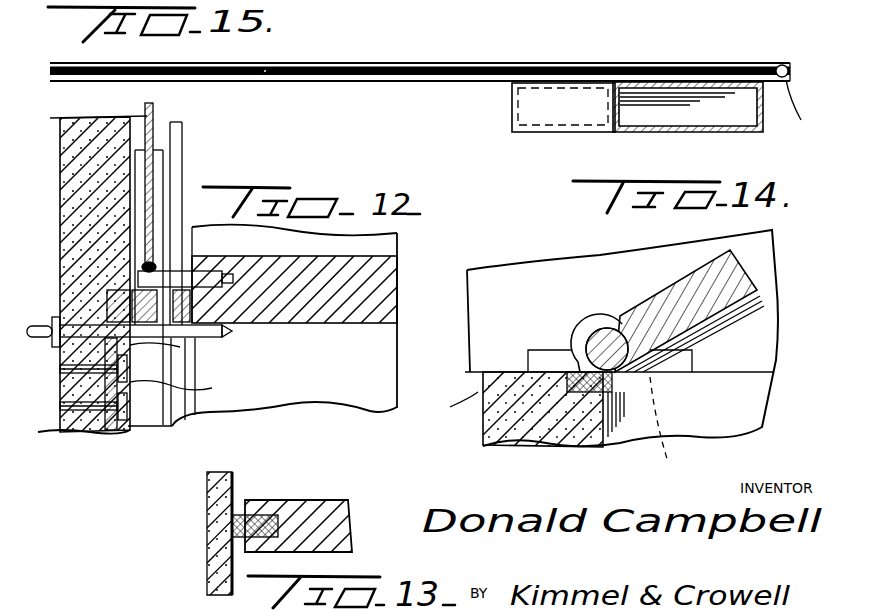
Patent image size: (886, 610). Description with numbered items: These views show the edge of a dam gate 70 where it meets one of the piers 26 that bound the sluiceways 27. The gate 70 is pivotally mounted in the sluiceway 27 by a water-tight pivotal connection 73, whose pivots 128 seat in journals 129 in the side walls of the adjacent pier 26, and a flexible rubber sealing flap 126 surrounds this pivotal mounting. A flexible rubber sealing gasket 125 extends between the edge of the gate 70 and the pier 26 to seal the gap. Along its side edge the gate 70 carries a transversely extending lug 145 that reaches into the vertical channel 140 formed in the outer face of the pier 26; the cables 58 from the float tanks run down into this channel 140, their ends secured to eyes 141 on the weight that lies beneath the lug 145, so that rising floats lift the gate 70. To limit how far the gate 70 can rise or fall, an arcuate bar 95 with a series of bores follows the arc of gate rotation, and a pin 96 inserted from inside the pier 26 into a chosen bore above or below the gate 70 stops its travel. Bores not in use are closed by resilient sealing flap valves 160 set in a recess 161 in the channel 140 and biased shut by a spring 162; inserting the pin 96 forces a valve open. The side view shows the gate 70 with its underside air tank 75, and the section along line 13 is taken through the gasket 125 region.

In FIG. 12, the section line 13- 13 is at (163, 378).
In FIG. 12, the pier 26 is at (63, 138).
In FIG. 13, the pier 26 is at (213, 488).
In FIG. 14, the pier 26 is at (505, 282).
In FIG. 14, the sluiceway 27 is at (488, 372).
In FIG. 12, the cable 58 is at (146, 108).
In FIG. 15, the gate 70 is at (522, 62).
In FIG. 12, the gate 70 is at (373, 258).
In FIG. 13, the gate 70 is at (327, 502).
In FIG. 14, the gate 70 is at (677, 288).
In FIG. 14, the pivotal connection 73 is at (588, 330).
In FIG. 15, the air tank 75 is at (552, 115).
In FIG. 12, the arcuate bar 95 is at (62, 405).
In FIG. 12, the pin 96 is at (302, 338).
In FIG. 15, the flexible rubber sealing gasket 125 is at (366, 64).
In FIG. 13, the flexible rubber sealing gasket 125 is at (236, 515).
In FIG. 14, the flexible rubber sealing gasket 125 is at (589, 382).
In FIG. 15, the flexible rubber sealing flap 126 is at (792, 65).
In FIG. 14, the flexible rubber sealing flap 126 is at (507, 447).
In FIG. 15, the pivot 128 is at (801, 112).
In FIG. 14, the pivot 128 is at (674, 432).
In FIG. 14, the journal 129 is at (604, 320).
In FIG. 12, the channel 140 is at (160, 135).
In FIG. 12, the eye 141 is at (157, 264).
In FIG. 15, the lug 145 is at (268, 67).
In FIG. 12, the lug 145 is at (190, 285).
In FIG. 12, the resilient sealing flap valve 160 is at (196, 342).
In FIG. 12, the recess 161 is at (180, 388).
In FIG. 14, the spring 162 is at (437, 413).